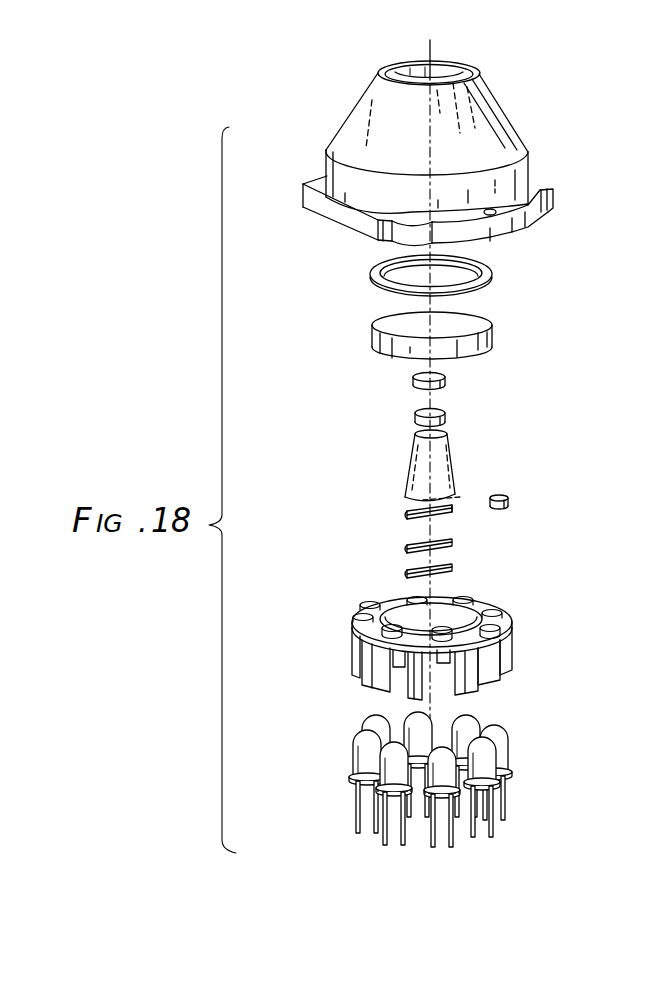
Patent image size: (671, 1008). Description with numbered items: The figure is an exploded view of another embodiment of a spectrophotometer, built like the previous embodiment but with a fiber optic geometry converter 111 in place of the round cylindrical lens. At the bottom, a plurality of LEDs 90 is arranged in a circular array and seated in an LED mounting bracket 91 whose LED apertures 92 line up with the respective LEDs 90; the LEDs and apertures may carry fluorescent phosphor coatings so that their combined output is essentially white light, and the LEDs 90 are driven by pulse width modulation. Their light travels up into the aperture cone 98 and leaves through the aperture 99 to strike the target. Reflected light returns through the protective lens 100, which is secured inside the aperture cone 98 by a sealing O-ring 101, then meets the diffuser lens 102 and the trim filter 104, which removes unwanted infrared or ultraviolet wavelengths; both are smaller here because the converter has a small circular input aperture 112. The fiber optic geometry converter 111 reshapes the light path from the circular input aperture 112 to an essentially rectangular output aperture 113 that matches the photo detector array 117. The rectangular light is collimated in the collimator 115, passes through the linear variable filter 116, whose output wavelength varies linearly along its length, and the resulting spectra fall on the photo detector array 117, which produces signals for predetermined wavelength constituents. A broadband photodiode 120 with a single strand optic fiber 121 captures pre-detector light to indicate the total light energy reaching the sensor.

The aperture 99 is at (476, 66).
The aperture cone 98 is at (500, 110).
The sealing O-ring 101 is at (493, 272).
The protective lens 100 is at (493, 338).
The diffuser lens 102 is at (446, 380).
The trim filter 104 is at (446, 413).
The circular input aperture 112 is at (414, 437).
The fiber optic geometry converter 111 is at (446, 455).
The single strand optic fiber 121 is at (460, 497).
The broadband photodiode 120 is at (509, 505).
The rectangular output aperture 113 is at (406, 503).
The collimator 115 is at (453, 512).
The linear variable filter 116 is at (454, 545).
The photo detector array 117 is at (454, 570).
The LED apertures 92 is at (506, 617).
The LED mounting bracket 91 is at (511, 662).
The LEDs 90 is at (496, 758).